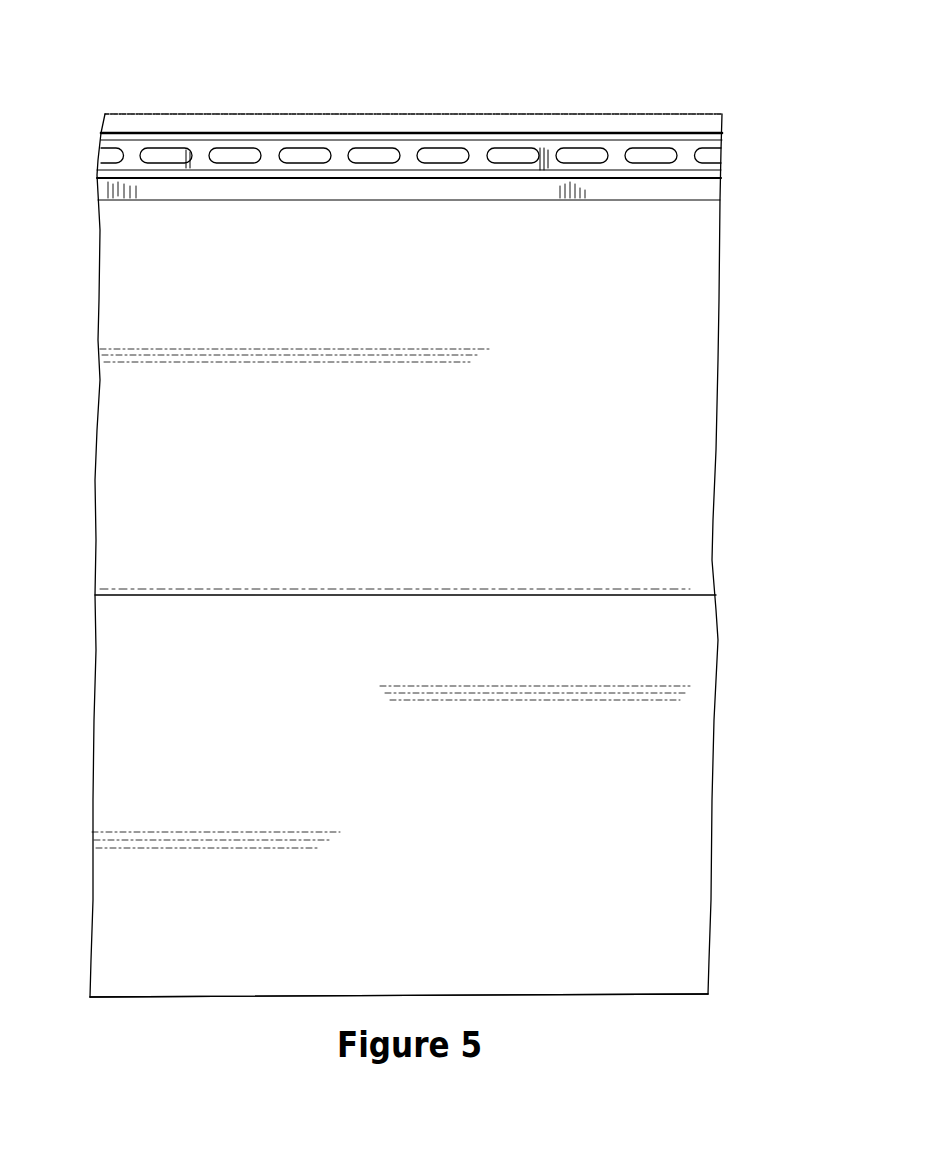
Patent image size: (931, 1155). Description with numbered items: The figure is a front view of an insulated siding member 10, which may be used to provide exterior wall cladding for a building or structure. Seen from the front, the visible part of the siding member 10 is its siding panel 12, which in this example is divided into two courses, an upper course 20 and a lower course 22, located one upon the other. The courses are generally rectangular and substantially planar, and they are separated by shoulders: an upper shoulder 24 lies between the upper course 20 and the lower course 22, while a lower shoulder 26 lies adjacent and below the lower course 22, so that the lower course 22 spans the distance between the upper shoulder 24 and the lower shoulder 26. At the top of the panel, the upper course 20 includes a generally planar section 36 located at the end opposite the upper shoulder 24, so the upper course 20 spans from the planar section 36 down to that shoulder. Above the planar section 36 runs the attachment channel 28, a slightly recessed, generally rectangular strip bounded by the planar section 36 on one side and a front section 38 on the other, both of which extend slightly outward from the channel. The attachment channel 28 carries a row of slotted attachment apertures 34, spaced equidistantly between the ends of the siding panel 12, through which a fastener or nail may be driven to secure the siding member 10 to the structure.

The insulated siding member 10 is at (437, 66).
The siding panel 12 is at (168, 490).
The upper course 20 is at (673, 402).
The lower course 22 is at (653, 852).
The upper shoulder 24 is at (673, 598).
The lower shoulder 26 is at (670, 993).
The attachment channel 28 is at (614, 153).
The attachment apertures 34 is at (505, 153).
The planar section 36 is at (697, 190).
The front section 38 is at (700, 123).